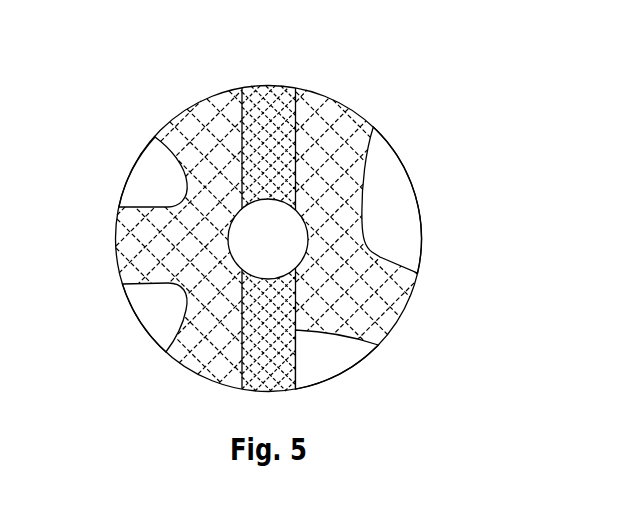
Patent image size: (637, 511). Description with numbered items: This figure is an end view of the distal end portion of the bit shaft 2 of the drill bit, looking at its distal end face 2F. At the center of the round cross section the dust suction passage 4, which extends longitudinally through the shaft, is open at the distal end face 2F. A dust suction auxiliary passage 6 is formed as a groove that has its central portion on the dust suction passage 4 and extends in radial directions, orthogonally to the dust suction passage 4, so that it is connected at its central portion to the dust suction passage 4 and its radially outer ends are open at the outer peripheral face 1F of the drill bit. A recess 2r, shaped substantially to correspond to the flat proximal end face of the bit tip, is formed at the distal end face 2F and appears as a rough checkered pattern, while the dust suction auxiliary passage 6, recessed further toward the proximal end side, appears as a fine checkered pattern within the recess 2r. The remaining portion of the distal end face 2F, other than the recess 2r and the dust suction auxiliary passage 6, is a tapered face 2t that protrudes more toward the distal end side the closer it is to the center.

The bit shaft 2 is at (402, 143).
The tapered face 2t is at (143, 175).
The recess 2r is at (195, 122).
The distal end face 2F is at (328, 110).
The outer peripheral face 1F is at (252, 86).
The dust suction auxiliary passage 6 is at (268, 98).
The dust suction passage 4 is at (250, 240).